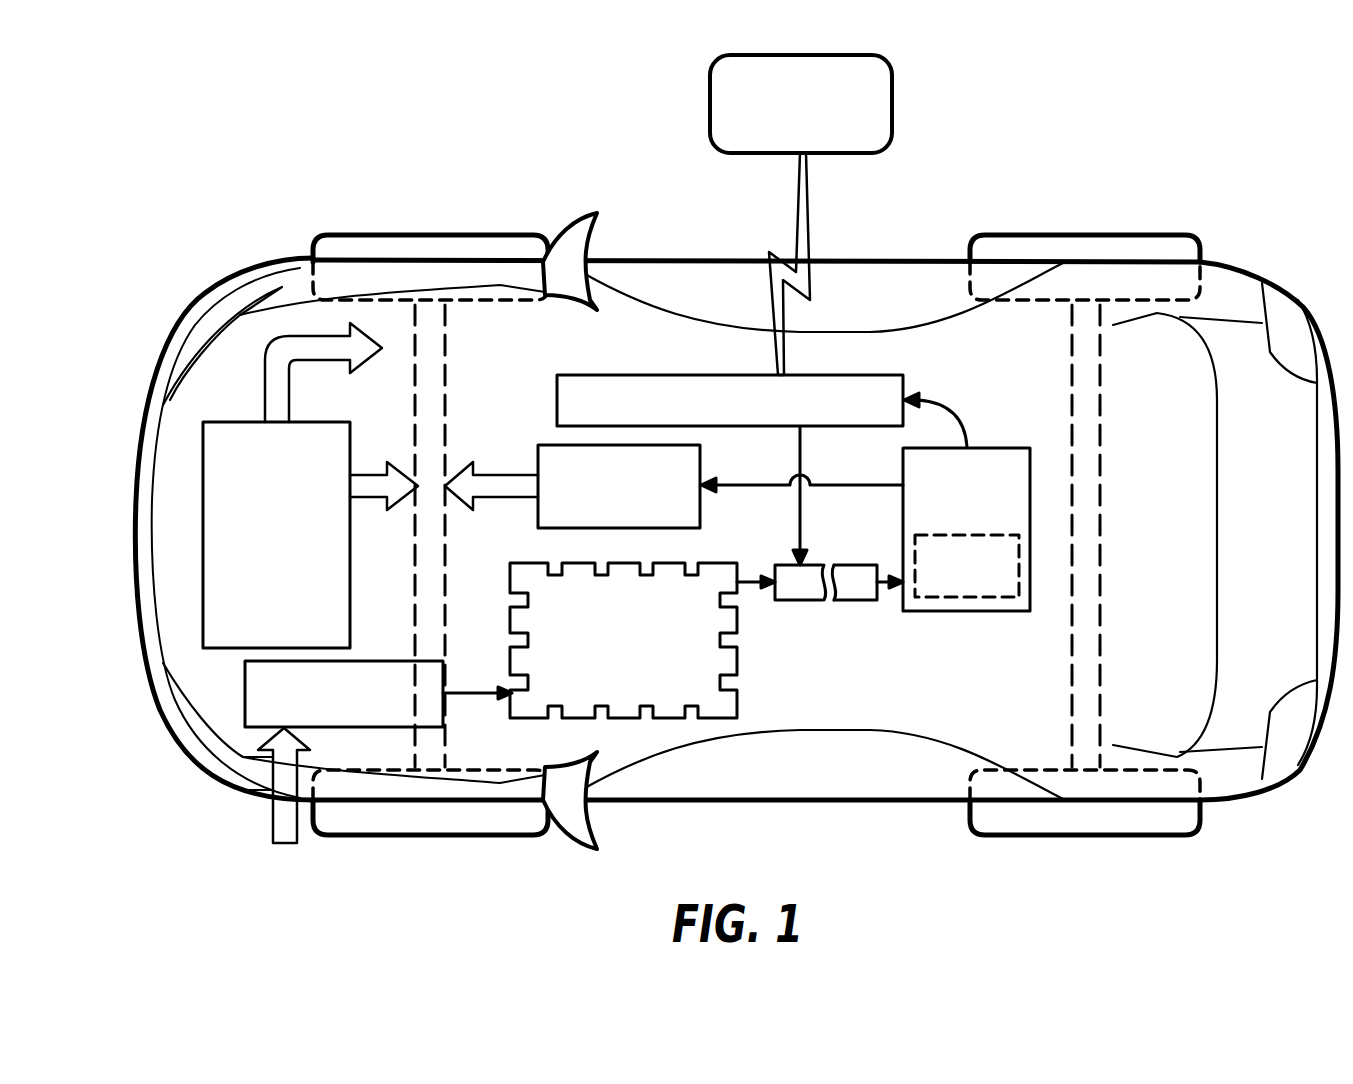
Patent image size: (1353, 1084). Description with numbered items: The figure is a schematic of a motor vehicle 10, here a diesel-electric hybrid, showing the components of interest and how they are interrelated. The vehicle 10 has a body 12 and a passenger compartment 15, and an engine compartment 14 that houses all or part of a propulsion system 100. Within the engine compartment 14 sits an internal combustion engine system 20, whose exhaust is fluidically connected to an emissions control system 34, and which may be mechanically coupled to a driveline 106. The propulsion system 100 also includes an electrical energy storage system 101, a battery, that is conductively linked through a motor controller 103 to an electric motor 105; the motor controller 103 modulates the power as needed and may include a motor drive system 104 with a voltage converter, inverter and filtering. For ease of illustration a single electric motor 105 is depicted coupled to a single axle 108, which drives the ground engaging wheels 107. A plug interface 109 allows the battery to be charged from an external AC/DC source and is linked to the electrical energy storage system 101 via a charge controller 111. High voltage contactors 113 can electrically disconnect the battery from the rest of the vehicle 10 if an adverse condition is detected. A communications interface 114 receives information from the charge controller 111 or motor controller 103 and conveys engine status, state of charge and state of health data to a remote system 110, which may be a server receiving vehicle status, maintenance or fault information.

The motor vehicle 10 is at (879, 256).
The body 12 is at (613, 256).
The engine compartment 14 is at (213, 381).
The passenger compartment 15 is at (903, 787).
The internal combustion engine system 20 is at (186, 466).
The emissions control system 34 is at (310, 334).
The propulsion system 100 is at (378, 326).
The electrical energy storage system 101 is at (646, 652).
The motor controller 103 is at (988, 508).
The motor drive system 104 is at (988, 578).
The electric motor 105 is at (641, 502).
The driveline 106 is at (448, 437).
The wheel 107 is at (428, 233).
The axle 108 is at (448, 372).
The plug interface 109 is at (267, 828).
The remote system 110 is at (893, 102).
The charge controller 111 is at (366, 705).
The high voltage contactor 113 is at (815, 605).
The communications interface 114 is at (752, 415).